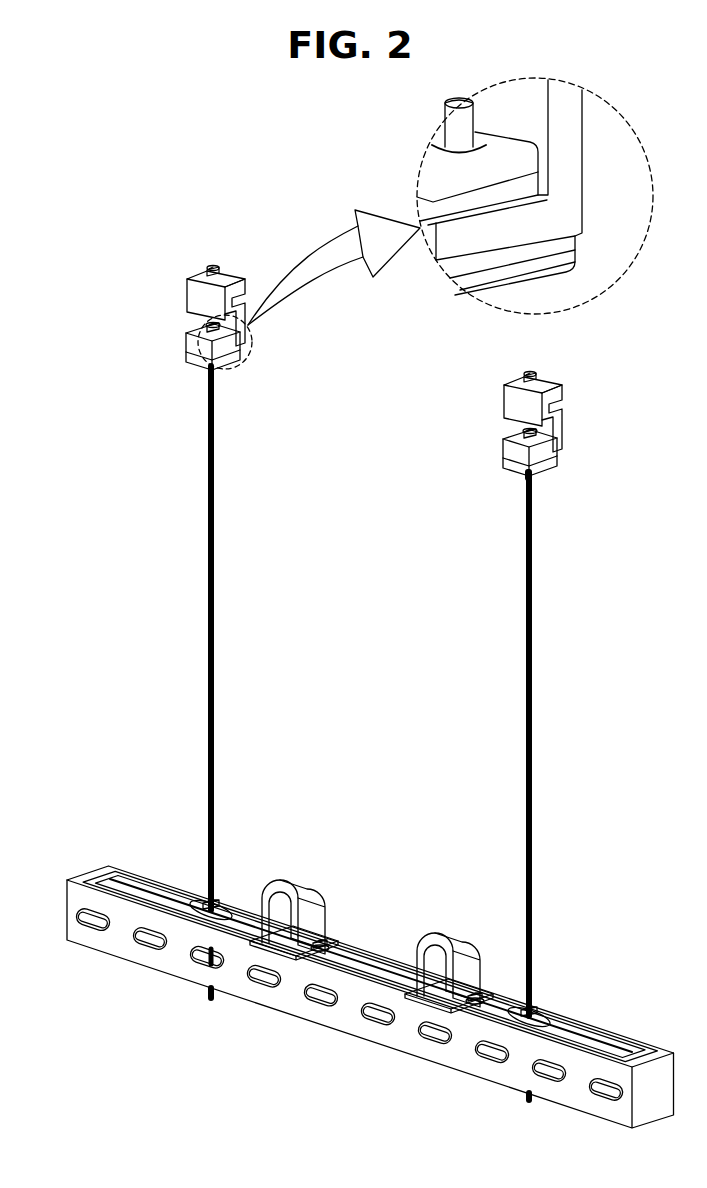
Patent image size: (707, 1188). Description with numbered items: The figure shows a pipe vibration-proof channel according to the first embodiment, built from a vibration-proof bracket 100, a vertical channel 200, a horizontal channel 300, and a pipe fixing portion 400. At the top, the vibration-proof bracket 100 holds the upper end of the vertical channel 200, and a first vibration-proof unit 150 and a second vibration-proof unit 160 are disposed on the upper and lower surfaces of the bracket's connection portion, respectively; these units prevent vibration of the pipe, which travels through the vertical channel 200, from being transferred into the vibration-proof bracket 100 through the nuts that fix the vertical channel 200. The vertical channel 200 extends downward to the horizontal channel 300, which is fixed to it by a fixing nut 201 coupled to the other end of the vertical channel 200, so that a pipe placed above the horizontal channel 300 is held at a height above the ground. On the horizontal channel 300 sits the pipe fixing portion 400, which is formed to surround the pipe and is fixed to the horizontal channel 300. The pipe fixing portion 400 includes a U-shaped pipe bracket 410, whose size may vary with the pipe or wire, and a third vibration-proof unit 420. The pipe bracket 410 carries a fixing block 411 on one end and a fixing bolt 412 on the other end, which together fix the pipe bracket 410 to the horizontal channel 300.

The vibration-proof bracket 100 is at (172, 299).
The first vibration-proof unit 150 is at (182, 337).
The second vibration-proof unit 160 is at (182, 354).
The vertical channel 200 is at (208, 600).
The fixing nut 201 is at (188, 908).
The horizontal channel 300 is at (87, 875).
The pipe fixing portion 400 is at (297, 962).
The pipe bracket 410 is at (318, 926).
The fixing block 411 is at (322, 958).
The fixing bolt 412 is at (326, 947).
The third vibration-proof unit 420 is at (262, 945).